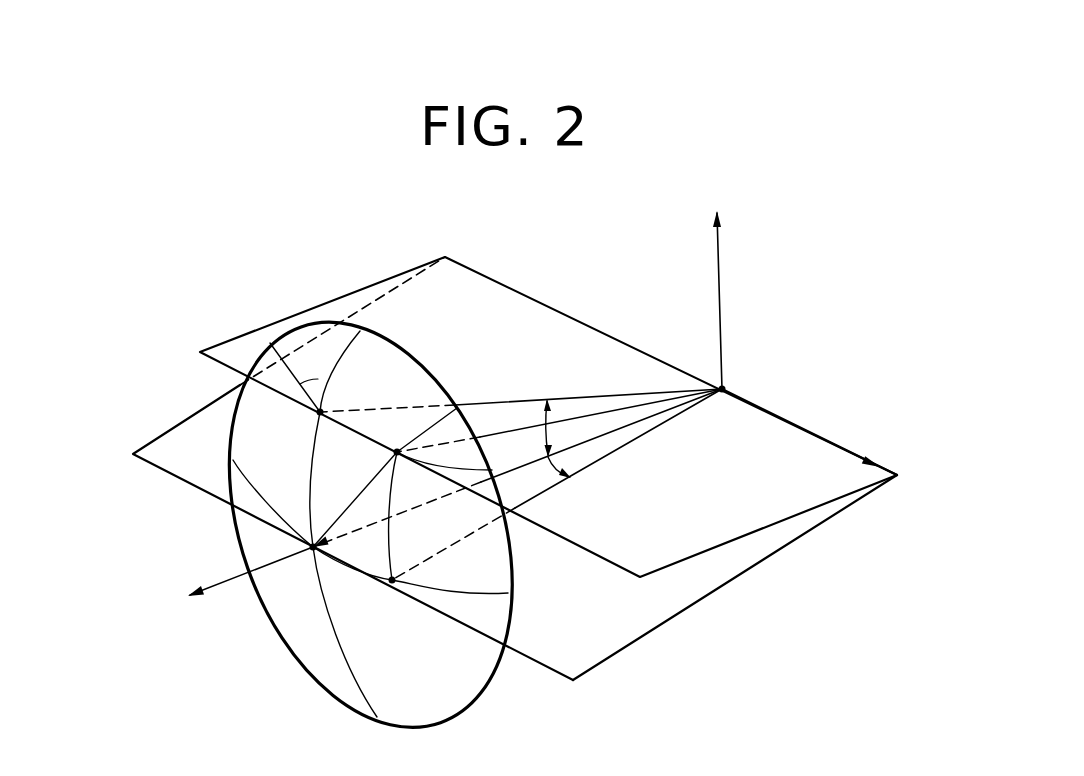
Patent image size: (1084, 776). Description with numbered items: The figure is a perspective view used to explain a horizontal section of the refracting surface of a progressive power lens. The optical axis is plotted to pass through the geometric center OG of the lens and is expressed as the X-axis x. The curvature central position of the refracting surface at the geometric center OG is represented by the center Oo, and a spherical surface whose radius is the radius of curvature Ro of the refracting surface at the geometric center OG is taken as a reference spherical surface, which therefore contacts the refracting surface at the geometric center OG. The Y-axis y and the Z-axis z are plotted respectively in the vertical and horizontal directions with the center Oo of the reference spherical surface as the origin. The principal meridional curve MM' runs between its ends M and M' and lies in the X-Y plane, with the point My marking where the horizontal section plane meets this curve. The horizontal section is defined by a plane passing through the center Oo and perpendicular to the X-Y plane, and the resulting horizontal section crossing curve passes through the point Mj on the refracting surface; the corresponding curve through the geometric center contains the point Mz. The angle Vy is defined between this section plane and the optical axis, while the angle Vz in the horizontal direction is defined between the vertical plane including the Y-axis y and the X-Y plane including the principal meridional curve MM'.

The X-axis x is at (455, 508).
The Y-axis y is at (727, 300).
The Z-axis z is at (809, 432).
The center of the reference spherical surface Oo is at (725, 388).
The geometric center of the lens OG is at (312, 550).
The radius of curvature Ro is at (452, 494).
The end point of the principal meridional curve M is at (352, 427).
The end point of the principal meridional curve M' is at (355, 650).
The point on the principal meridional curve My is at (494, 413).
The point on the horizontal section crossing curve Mj is at (543, 484).
The point on the horizontal section crossing curve Φo Mz is at (542, 503).
The angle Vy is at (527, 430).
The angle Vz is at (542, 477).